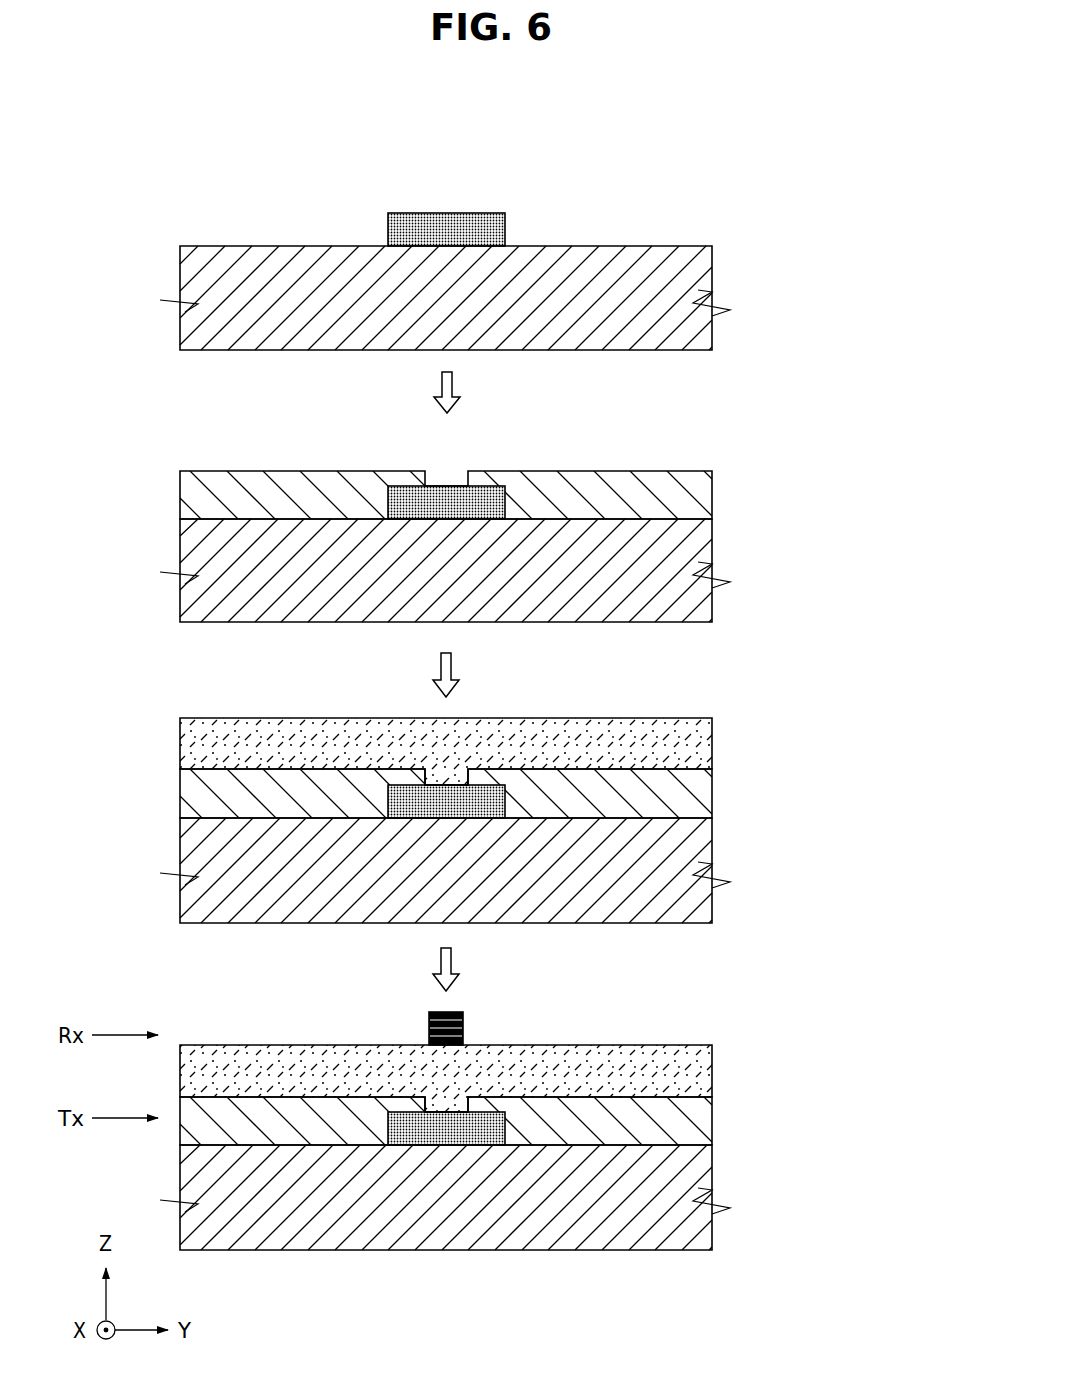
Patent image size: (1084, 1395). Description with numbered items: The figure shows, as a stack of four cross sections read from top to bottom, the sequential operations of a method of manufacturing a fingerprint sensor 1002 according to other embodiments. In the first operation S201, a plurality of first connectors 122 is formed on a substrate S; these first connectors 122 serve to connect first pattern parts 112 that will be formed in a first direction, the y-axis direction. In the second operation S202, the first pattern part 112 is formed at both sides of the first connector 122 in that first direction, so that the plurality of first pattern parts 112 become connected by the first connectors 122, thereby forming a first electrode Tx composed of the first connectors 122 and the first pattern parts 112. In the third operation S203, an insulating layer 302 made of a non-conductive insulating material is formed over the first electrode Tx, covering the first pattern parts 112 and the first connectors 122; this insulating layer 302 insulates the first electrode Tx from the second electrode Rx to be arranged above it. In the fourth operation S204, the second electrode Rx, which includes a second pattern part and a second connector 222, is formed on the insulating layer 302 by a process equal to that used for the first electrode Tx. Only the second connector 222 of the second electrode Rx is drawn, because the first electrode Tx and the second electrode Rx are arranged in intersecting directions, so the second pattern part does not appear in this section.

The first connector 122 is at (445, 228).
The first pattern part 112 is at (697, 500).
The insulating layer 302 is at (697, 749).
The second connector 222 is at (464, 1024).
The substrate S is at (697, 296).
The fingerprint sensor 1002 is at (742, 1177).
The first operation S201 is at (824, 267).
The second operation S202 is at (824, 540).
The third operation S203 is at (825, 773).
The fourth operation S204 is at (825, 1098).